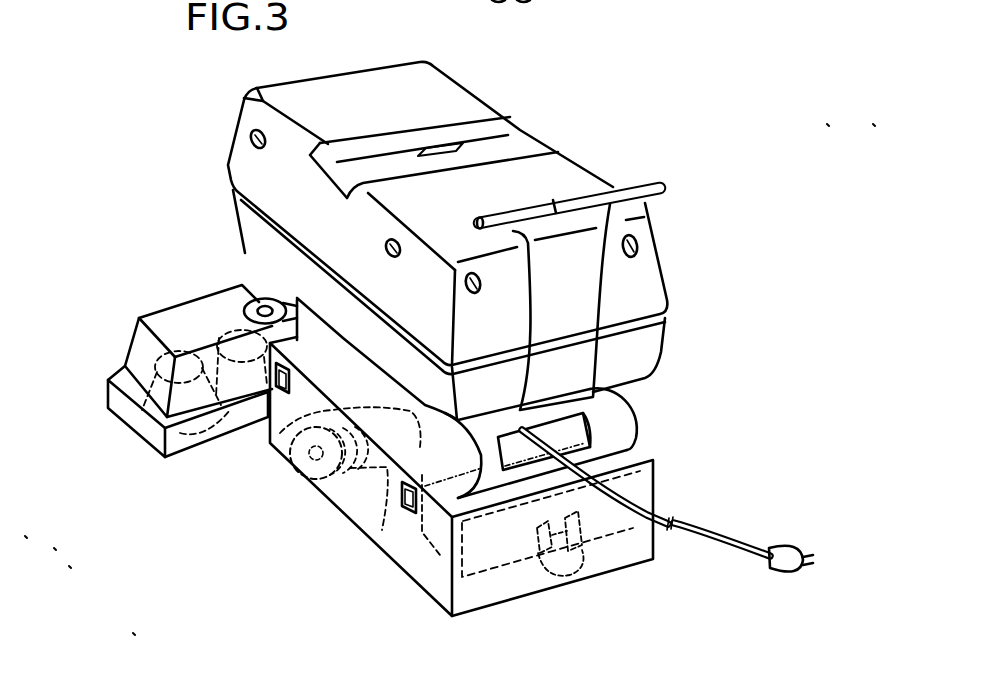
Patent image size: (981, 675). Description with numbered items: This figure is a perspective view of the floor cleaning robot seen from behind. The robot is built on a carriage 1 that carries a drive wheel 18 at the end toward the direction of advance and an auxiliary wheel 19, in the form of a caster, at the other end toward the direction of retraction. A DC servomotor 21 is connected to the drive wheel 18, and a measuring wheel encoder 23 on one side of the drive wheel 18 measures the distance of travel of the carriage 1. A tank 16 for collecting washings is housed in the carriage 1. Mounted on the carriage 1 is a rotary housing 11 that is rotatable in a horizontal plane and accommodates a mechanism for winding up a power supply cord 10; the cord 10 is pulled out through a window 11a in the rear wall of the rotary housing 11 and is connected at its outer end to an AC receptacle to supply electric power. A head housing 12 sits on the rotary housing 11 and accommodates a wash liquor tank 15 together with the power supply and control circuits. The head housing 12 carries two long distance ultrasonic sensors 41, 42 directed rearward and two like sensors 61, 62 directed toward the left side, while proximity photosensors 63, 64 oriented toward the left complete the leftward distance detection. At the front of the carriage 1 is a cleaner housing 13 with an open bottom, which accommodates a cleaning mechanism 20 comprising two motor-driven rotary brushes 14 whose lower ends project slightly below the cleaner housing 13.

The carriage 1 is at (444, 487).
The power supply cord 10 is at (728, 532).
The rotary housing 11 is at (586, 437).
The window 11a is at (593, 433).
The head housing 12 is at (465, 112).
The cleaner housing 13 is at (177, 327).
The rotary brush 14 is at (138, 414).
The wash liquor tank 15 is at (532, 146).
The tank for collecting washings 16 is at (433, 557).
The drive wheel 18 is at (300, 440).
The auxiliary wheel 19 is at (547, 578).
The cleaning mechanism 20 is at (197, 345).
The DC servomotor 21 is at (392, 522).
The measuring wheel encoder 23 is at (345, 500).
The long distance ultrasonic sensor 41 is at (476, 293).
The long distance ultrasonic sensor 42 is at (637, 256).
The long distance ultrasonic sensor 61 is at (252, 137).
The long distance ultrasonic sensor 62 is at (387, 245).
The proximity photosensor 63 is at (277, 388).
The proximity photosensor 64 is at (403, 513).